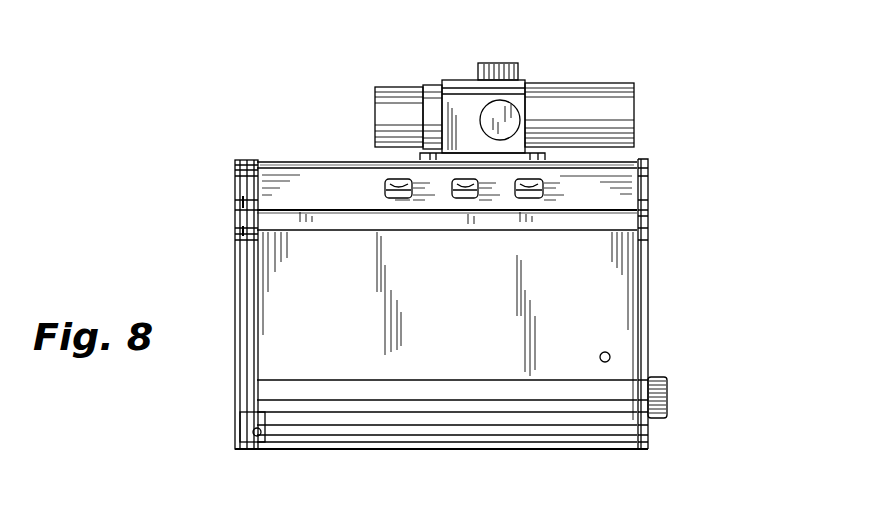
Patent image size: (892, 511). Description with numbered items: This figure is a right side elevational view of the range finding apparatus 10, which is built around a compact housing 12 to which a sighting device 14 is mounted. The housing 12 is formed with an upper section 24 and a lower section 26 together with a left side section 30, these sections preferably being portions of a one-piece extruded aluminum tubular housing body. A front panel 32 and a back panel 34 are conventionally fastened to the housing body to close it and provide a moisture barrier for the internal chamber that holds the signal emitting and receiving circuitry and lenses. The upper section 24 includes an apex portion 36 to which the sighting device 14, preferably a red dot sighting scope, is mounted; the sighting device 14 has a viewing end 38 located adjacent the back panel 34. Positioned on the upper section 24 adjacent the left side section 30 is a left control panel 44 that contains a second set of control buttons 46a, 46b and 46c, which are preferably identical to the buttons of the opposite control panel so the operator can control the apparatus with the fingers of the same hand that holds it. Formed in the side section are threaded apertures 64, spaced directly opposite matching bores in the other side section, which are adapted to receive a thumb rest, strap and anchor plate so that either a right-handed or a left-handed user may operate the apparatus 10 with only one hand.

The range finding apparatus 10 is at (716, 96).
The housing 12 is at (625, 278).
The sighting device 14 is at (583, 95).
The upper section 24 is at (336, 161).
The lower section 26 is at (421, 450).
The left side section 30 is at (570, 373).
The front panel 32 is at (234, 298).
The back panel 34 is at (648, 297).
The apex portion 36 is at (636, 160).
The viewing end 38 is at (635, 105).
The left control panel 44 is at (628, 200).
The control button 46a is at (532, 198).
The control button 46b is at (458, 198).
The control button 46c is at (386, 198).
The threaded aperture 64 is at (611, 357).